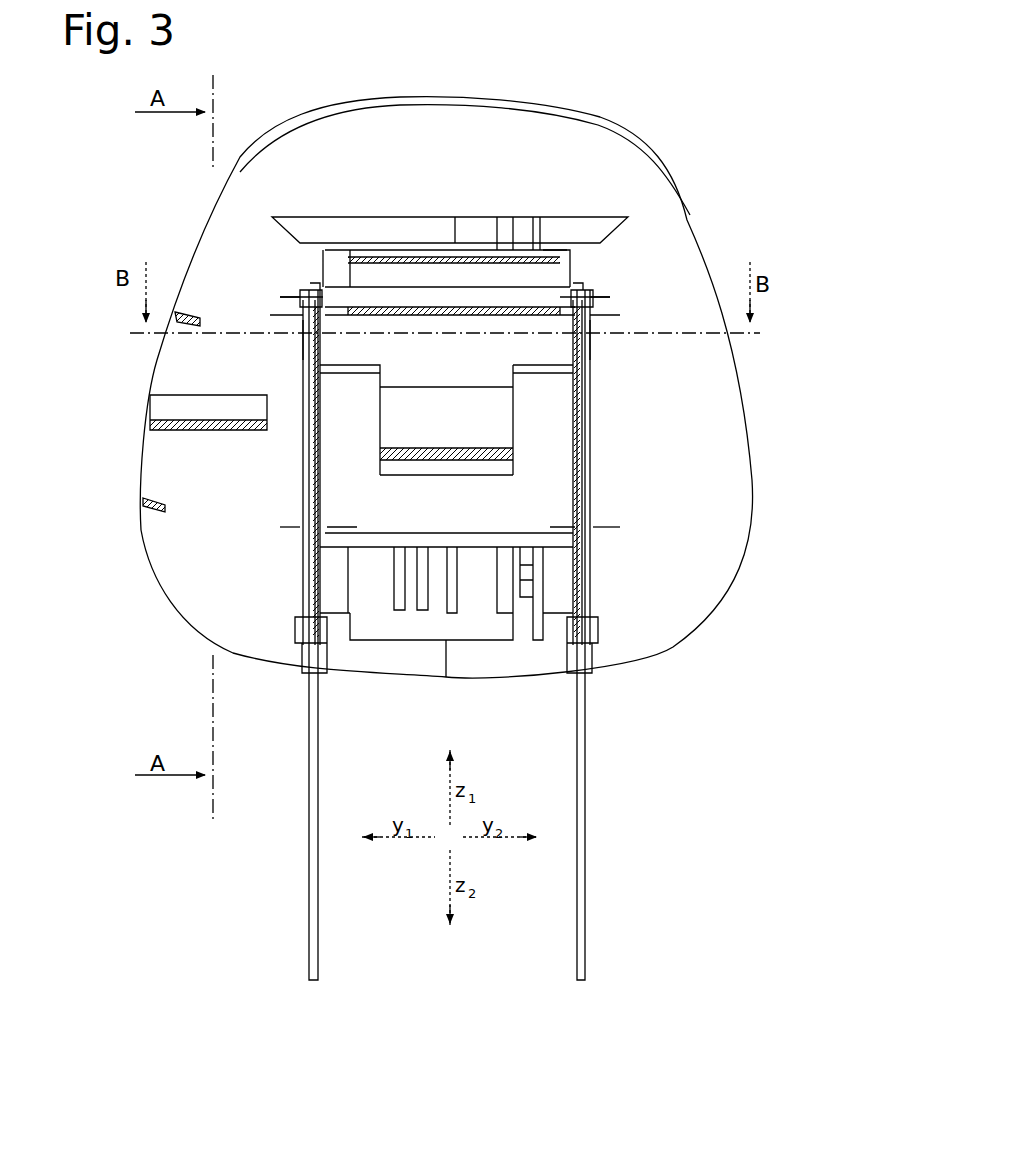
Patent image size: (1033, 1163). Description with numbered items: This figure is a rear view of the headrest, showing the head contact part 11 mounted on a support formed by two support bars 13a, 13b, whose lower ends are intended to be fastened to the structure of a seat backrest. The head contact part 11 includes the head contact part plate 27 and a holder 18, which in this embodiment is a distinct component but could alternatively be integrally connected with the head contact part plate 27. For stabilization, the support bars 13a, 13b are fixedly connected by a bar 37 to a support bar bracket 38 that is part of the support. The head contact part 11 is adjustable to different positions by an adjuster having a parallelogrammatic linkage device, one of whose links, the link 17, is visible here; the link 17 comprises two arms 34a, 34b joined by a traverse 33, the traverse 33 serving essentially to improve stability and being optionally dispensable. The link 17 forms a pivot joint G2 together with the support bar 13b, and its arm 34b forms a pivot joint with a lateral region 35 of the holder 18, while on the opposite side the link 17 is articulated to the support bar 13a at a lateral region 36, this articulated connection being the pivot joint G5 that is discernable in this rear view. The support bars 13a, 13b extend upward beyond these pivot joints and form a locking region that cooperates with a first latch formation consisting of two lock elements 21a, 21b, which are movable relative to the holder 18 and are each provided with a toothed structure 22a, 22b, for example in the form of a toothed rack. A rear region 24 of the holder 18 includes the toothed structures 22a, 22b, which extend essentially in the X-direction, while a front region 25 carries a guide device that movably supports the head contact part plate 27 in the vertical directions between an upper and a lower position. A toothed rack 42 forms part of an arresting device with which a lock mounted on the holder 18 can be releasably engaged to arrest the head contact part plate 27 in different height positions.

The head contact part 11 is at (686, 178).
The head contact part plate 27 is at (522, 132).
The support bar 13a is at (585, 858).
The support bar 13b is at (308, 851).
The link 17 is at (363, 513).
The holder 18 is at (460, 327).
The lock element 21a is at (602, 328).
The lock element 21b is at (295, 330).
The toothed structure 22a is at (602, 339).
The toothed structure 22b is at (297, 343).
The rear region 24 is at (372, 322).
The front region 25 is at (408, 274).
The traverse 33 is at (458, 512).
The arm 34a is at (556, 430).
The arm 34b is at (345, 446).
The lateral region 35 is at (596, 320).
The lateral region 36 is at (296, 323).
The bar 37 is at (500, 292).
The support bar bracket 38 is at (528, 292).
The toothed rack 42 is at (550, 593).
The pivot joint G2 is at (298, 529).
The pivot joint G5 is at (603, 531).